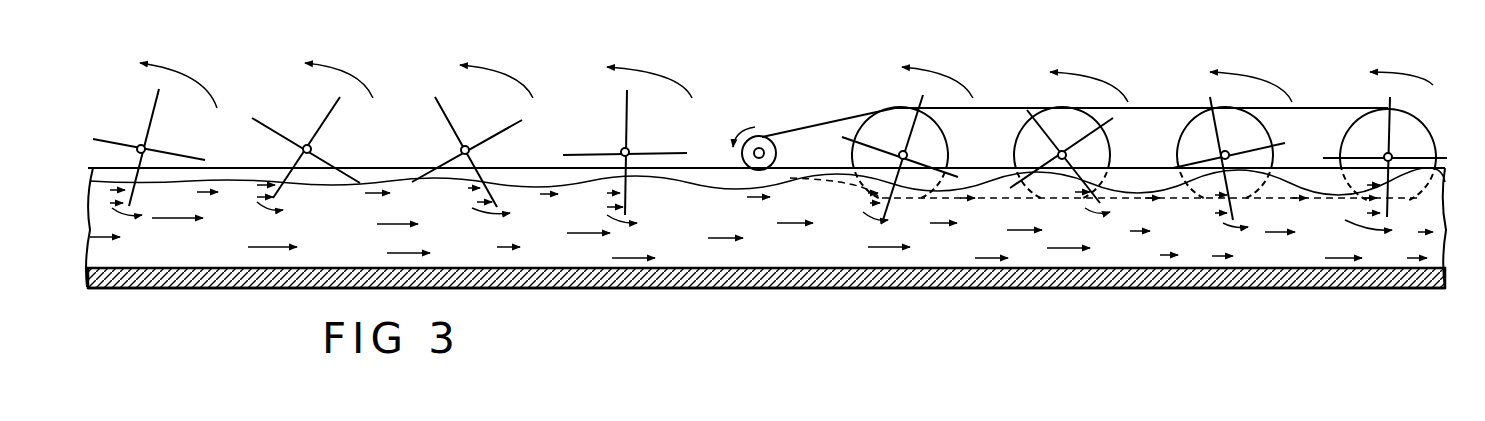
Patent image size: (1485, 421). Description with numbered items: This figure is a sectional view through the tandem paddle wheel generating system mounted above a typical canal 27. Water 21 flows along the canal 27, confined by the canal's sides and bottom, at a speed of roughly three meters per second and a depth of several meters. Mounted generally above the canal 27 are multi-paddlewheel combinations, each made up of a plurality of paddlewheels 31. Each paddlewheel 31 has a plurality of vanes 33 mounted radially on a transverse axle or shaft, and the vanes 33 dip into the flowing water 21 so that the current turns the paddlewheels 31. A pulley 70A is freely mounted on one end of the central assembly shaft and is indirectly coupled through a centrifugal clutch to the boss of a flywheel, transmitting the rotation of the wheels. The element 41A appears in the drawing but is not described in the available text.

The water 21 is at (677, 243).
The canal 27 is at (807, 295).
The paddlewheel 31 is at (1038, 95).
The vane 33 is at (205, 160).
The end rotor 41A is at (1328, 112).
The pulley 70A is at (765, 137).